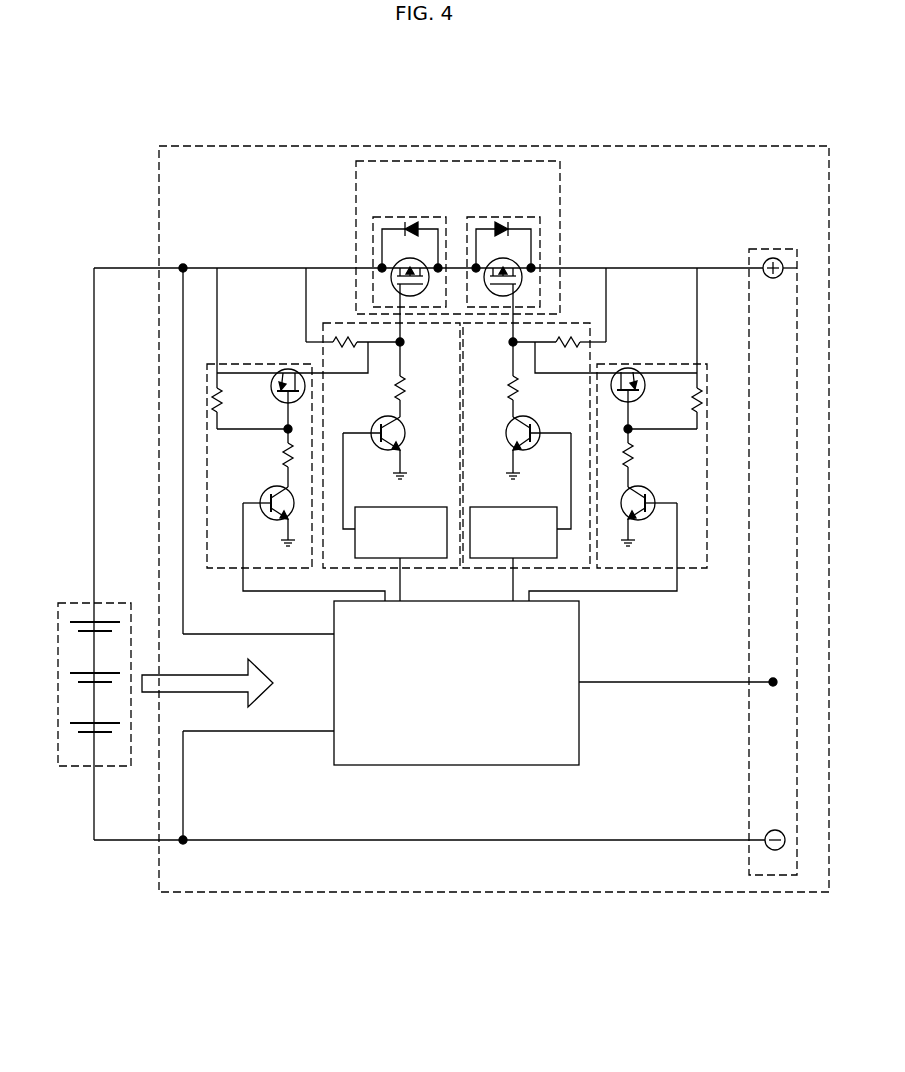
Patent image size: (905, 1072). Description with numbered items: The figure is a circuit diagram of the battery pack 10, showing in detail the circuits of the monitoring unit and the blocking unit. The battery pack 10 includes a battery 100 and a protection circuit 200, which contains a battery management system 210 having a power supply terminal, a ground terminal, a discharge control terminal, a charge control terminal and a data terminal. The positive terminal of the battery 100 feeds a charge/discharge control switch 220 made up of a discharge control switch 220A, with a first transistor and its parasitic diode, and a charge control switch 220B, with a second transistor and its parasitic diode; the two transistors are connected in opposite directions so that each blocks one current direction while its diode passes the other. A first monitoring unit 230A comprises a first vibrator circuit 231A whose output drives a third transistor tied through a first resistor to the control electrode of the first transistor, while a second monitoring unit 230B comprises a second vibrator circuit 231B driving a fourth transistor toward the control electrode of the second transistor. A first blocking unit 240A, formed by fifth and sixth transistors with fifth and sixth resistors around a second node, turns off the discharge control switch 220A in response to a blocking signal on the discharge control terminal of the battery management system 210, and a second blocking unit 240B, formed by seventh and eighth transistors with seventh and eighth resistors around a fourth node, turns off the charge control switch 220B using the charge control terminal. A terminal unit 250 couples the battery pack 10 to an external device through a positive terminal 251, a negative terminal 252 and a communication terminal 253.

The battery pack 10 is at (438, 87).
The battery 100 is at (118, 603).
The protection circuit 200 is at (633, 146).
The battery management system (BMS) 210 is at (579, 657).
The charge/discharge control switch 220 is at (560, 176).
The discharge control switch 220A is at (397, 217).
The charge control switch 220B is at (493, 217).
The first monitoring unit 230A is at (338, 323).
The second monitoring unit 230B is at (575, 323).
The first vibrator circuit 231A is at (424, 507).
The second vibrator circuit 231B is at (480, 507).
The first blocking unit 240A is at (248, 364).
The second blocking unit 240B is at (657, 364).
The terminal unit 250 is at (773, 249).
The positive terminal 251 is at (773, 279).
The negative terminal 252 is at (775, 830).
The communication terminal 253 is at (773, 678).